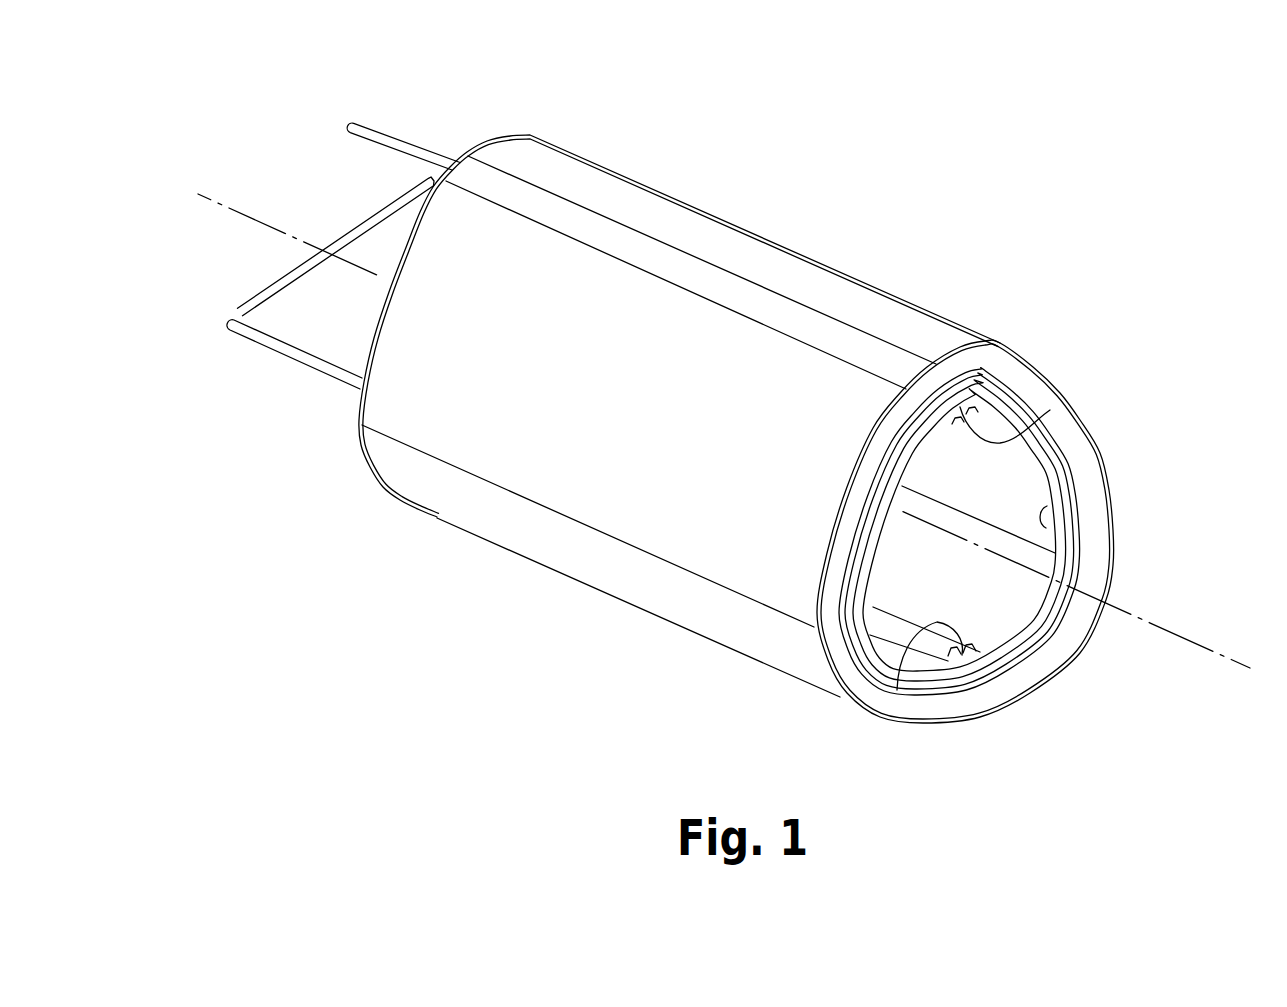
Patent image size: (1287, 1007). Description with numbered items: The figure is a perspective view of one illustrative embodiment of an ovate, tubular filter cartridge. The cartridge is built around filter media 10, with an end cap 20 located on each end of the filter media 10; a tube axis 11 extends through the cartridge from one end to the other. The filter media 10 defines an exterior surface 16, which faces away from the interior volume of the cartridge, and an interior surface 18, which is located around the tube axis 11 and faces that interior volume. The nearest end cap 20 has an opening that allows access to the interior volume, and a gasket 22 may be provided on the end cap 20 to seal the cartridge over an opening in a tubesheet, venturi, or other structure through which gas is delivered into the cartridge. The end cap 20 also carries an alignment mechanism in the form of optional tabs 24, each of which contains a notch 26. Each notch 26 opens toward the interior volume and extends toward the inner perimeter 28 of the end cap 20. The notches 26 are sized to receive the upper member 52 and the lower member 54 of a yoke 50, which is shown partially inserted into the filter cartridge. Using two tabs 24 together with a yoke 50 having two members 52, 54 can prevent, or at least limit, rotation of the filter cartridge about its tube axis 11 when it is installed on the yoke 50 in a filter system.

The filter media 10 is at (798, 206).
The tube axis 11 is at (232, 207).
The exterior surface 16 is at (855, 296).
The interior surface 18 is at (1003, 608).
The end cap 20 is at (521, 132).
The gasket 22 is at (1082, 453).
The tab 24 is at (1000, 410).
The notch 26 is at (1050, 410).
The inner perimeter 28 is at (1050, 520).
The yoke 50 is at (377, 98).
The upper member 52 is at (421, 150).
The lower member 54 is at (310, 366).